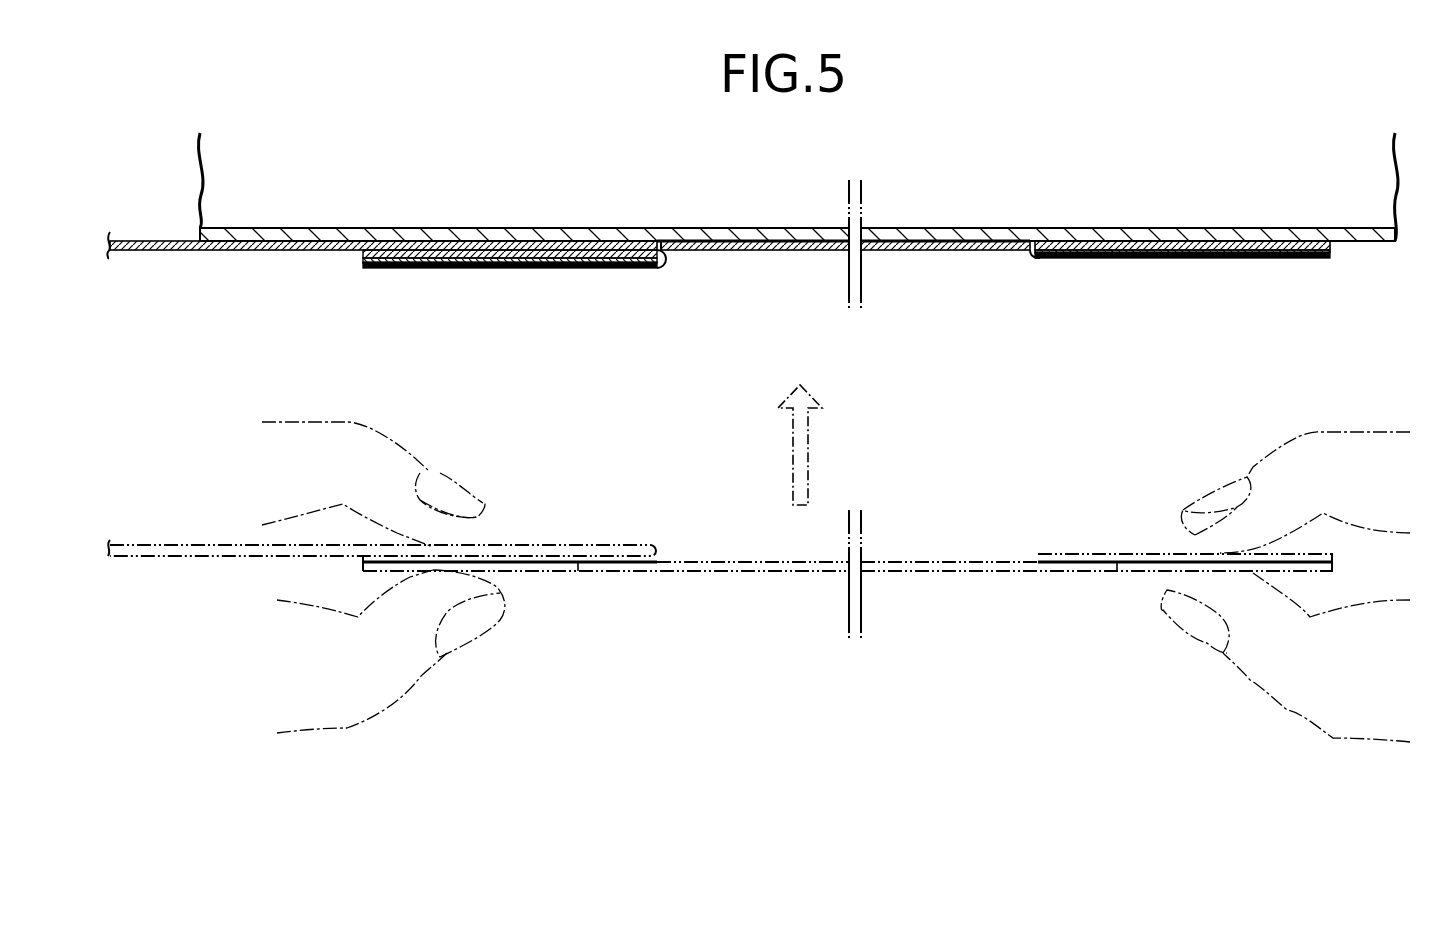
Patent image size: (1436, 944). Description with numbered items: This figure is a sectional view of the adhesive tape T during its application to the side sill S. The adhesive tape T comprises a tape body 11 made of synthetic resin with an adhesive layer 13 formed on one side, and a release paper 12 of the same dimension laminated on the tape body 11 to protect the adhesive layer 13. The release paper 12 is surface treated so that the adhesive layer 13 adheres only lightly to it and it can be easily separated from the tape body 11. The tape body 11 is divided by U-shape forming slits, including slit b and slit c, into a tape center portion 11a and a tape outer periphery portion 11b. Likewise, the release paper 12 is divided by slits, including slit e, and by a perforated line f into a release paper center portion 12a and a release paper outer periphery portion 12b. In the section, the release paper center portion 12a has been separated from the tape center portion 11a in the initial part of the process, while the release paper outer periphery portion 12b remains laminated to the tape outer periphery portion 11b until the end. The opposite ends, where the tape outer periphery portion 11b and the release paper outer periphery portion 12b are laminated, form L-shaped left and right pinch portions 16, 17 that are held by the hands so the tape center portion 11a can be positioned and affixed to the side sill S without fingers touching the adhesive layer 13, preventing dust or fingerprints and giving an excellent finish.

The tape body 11 is at (847, 450).
The tape center portion 11a is at (938, 251).
The tape outer periphery portion 11b is at (484, 268).
The release paper 12 is at (277, 250).
The release paper center portion 12a is at (170, 250).
The release paper outer periphery portion 12b is at (1197, 242).
The adhesive layer 13 is at (977, 241).
The left pinch portion 16 is at (543, 572).
The right pinch portion 17 is at (1142, 572).
The slit b is at (1113, 258).
The slit c is at (578, 268).
The slit e is at (1026, 258).
The perforated line f is at (662, 266).
The side sill S is at (1357, 241).
The adhesive tape T is at (896, 288).